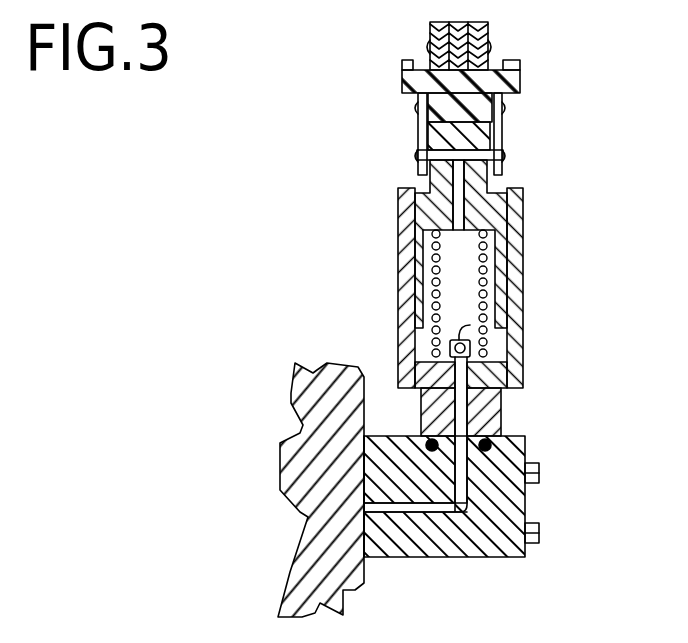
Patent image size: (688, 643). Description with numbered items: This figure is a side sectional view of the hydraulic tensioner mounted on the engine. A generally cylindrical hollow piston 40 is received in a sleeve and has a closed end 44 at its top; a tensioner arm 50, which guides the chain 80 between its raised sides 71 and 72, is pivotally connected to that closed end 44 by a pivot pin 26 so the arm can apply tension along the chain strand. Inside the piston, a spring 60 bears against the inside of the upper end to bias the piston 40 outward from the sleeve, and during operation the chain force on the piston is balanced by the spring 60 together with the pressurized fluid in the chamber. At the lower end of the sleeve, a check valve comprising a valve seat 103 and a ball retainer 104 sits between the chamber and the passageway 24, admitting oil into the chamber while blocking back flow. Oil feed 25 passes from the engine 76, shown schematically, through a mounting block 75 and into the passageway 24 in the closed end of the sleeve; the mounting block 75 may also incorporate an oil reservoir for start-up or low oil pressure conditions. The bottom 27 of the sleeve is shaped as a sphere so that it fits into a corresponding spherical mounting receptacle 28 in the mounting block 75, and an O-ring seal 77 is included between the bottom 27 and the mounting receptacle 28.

The passageway 24 is at (460, 373).
The oil feed 25 is at (378, 512).
The pivot pin 26 is at (500, 157).
The bottom of the sleeve 27 is at (487, 410).
The mounting receptacle 28 is at (493, 442).
The piston 40 is at (430, 180).
The closed end 44 is at (480, 182).
The tensioner arm 50 is at (523, 77).
The spring 60 is at (487, 278).
The raised side 71 is at (508, 70).
The raised side 72 is at (402, 73).
The mounting block 75 is at (388, 470).
The engine 76 is at (318, 466).
The O-ring seal 77 is at (485, 452).
The chain 80 is at (428, 36).
The valve seat 103 is at (470, 350).
The ball retainer 104 is at (470, 325).